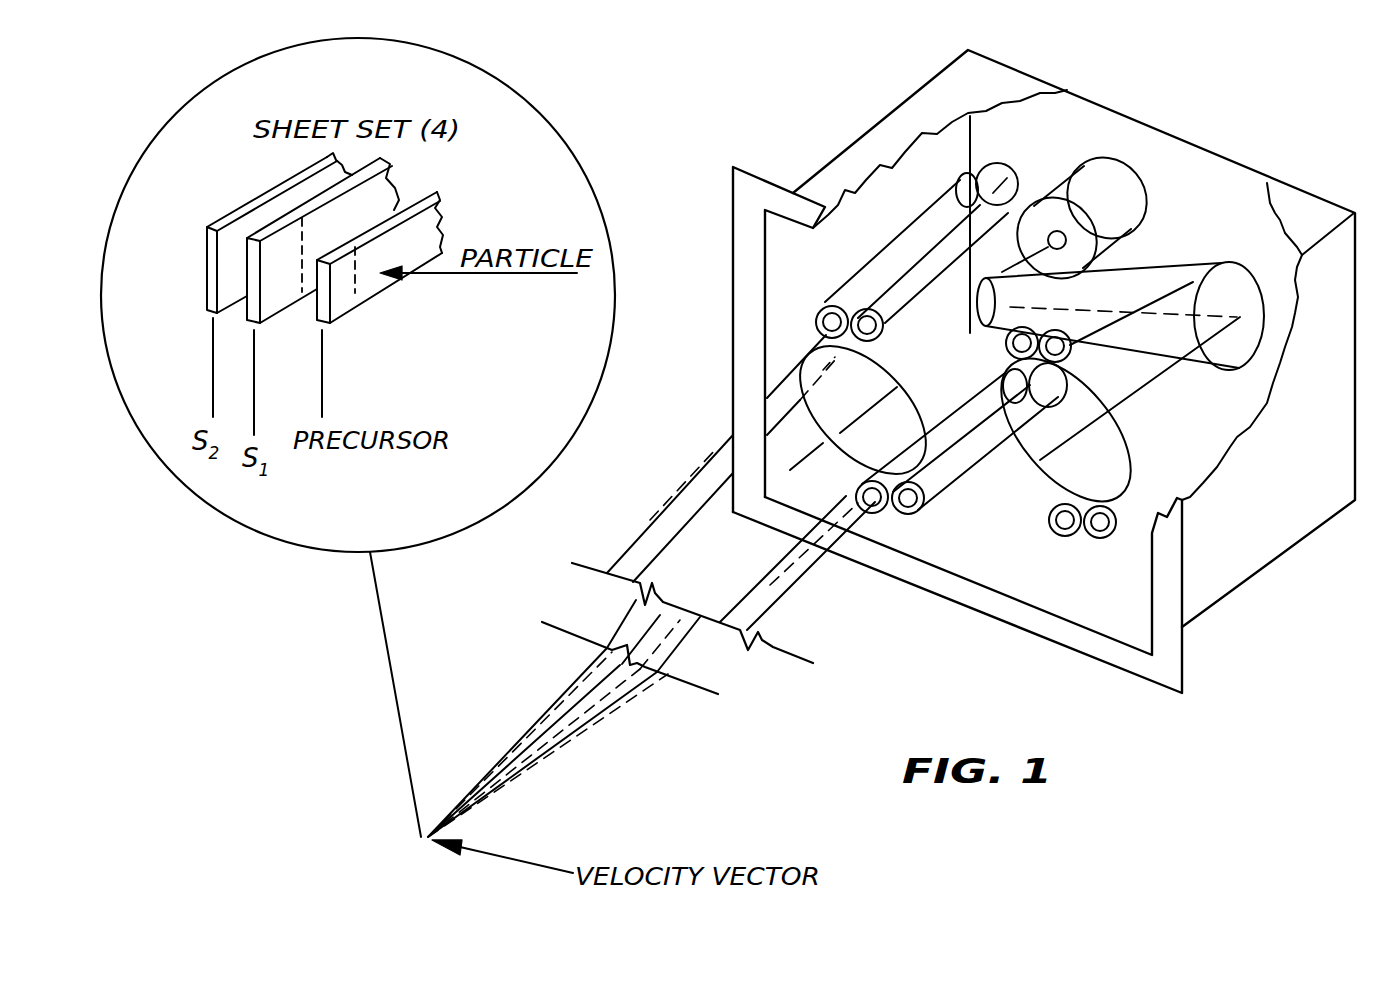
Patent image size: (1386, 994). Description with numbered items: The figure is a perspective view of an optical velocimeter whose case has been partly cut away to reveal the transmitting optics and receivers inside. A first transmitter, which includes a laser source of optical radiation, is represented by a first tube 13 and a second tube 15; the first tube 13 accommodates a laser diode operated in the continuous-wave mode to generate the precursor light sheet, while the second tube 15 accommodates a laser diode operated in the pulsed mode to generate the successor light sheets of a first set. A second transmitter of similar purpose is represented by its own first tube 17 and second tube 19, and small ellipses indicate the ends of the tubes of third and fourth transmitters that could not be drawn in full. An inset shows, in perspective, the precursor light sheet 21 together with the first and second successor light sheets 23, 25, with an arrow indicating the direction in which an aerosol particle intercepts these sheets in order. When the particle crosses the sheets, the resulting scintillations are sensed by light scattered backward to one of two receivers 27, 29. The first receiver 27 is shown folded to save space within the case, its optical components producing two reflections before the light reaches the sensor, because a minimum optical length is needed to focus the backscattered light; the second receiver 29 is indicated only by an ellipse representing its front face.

The first tube 13 is at (1012, 174).
The second tube 15 is at (856, 272).
The first tube 17 is at (967, 488).
The second tube 19 is at (940, 420).
The precursor light sheet 21 is at (385, 300).
The first successor light sheet 23 is at (277, 300).
The second successor light sheet 25 is at (207, 310).
The first receiver 27 is at (1187, 440).
The second receiver 29 is at (886, 364).